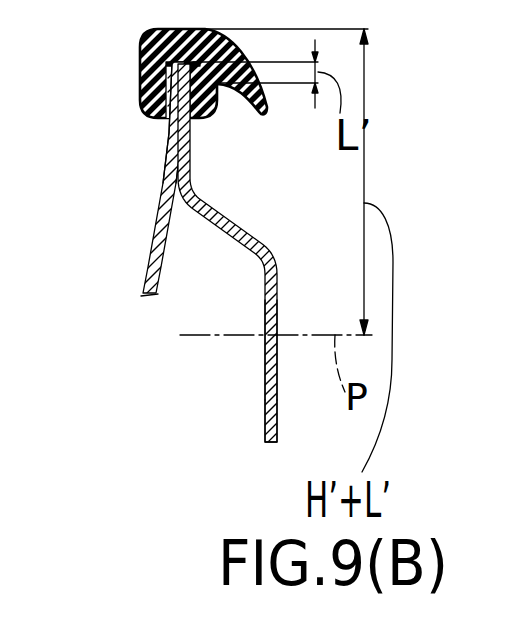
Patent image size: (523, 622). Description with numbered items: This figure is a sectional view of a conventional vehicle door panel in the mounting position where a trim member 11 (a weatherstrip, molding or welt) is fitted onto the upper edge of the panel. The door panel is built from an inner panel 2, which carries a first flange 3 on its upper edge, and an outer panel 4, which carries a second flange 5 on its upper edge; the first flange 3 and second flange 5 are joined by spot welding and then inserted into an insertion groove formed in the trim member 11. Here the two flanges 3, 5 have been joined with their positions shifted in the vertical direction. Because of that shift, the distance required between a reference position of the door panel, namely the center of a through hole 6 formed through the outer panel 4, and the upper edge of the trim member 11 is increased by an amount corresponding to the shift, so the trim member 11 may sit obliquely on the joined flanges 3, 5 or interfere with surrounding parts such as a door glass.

The trim member 11 is at (147, 40).
The inner panel 2 is at (148, 247).
The first flange 3 is at (167, 133).
The second flange 5 is at (183, 138).
The through hole 6 is at (263, 345).
The outer panel 4 is at (278, 413).